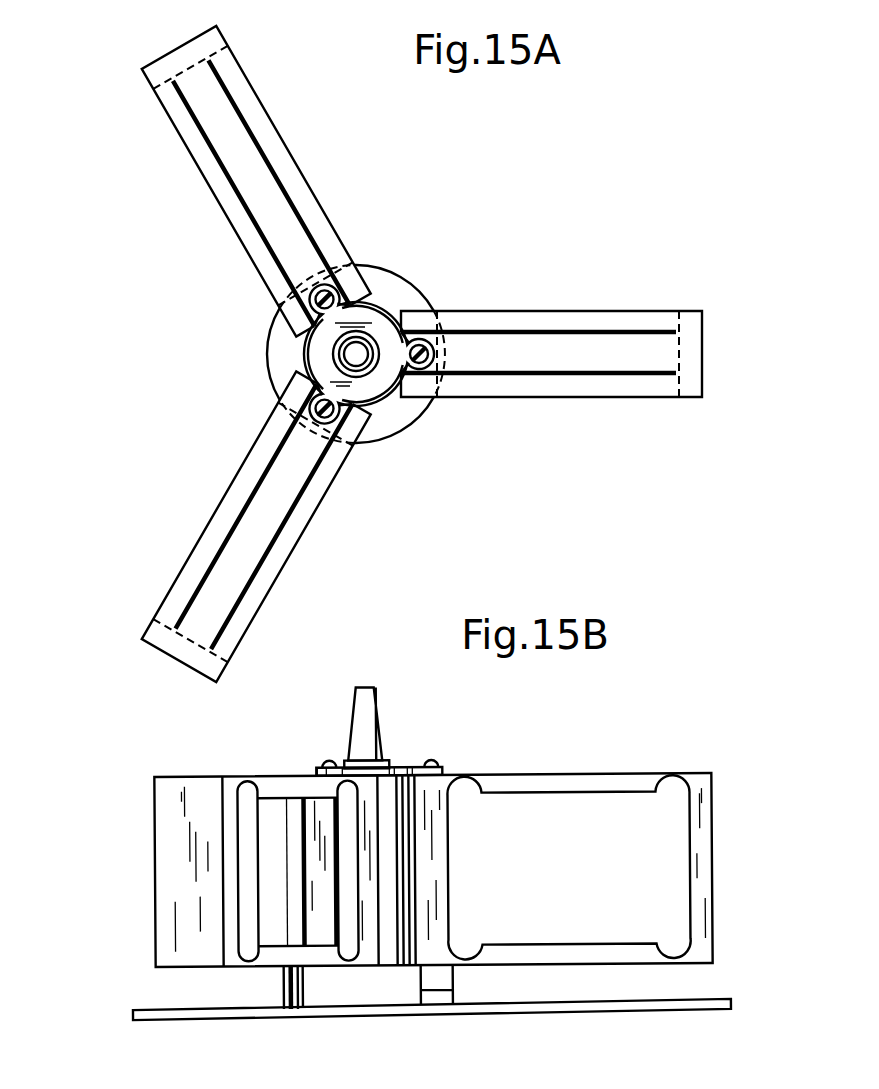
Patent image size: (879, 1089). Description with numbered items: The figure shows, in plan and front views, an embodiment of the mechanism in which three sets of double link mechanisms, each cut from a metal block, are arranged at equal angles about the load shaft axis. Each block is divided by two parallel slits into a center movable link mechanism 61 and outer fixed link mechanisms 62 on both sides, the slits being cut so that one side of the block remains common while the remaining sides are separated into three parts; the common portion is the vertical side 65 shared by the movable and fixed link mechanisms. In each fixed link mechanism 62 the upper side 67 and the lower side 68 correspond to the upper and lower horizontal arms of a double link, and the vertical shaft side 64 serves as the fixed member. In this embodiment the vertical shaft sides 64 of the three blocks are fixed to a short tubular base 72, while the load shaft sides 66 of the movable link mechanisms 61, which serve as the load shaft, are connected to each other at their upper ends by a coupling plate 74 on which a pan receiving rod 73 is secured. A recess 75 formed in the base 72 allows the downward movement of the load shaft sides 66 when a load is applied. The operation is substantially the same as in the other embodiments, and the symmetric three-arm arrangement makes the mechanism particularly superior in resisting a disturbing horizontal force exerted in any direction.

In FIG. 15A, the movable link mechanism 61 is at (277, 202).
In FIG. 15A, the fixed link mechanism 62 is at (230, 198).
In FIG. 15A, the vertical shaft side 64 is at (360, 287).
In FIG. 15B, the vertical shaft side 64 is at (288, 843).
In FIG. 15A, the vertical side 65 is at (182, 57).
In FIG. 15B, the vertical side 65 is at (173, 853).
In FIG. 15A, the load shaft side 66 is at (333, 277).
In FIG. 15B, the load shaft side 66 is at (313, 837).
In FIG. 15B, the upper side 67 is at (312, 785).
In FIG. 15B, the lower side 68 is at (278, 958).
In FIG. 15A, the short tubular base 72 is at (392, 288).
In FIG. 15B, the short tubular base 72 is at (390, 968).
In FIG. 15A, the pan receiving rod 73 is at (335, 352).
In FIG. 15B, the pan receiving rod 73 is at (380, 697).
In FIG. 15A, the coupling plate 74 is at (373, 385).
In FIG. 15B, the coupling plate 74 is at (402, 764).
In FIG. 15B, the recess 75 is at (433, 980).